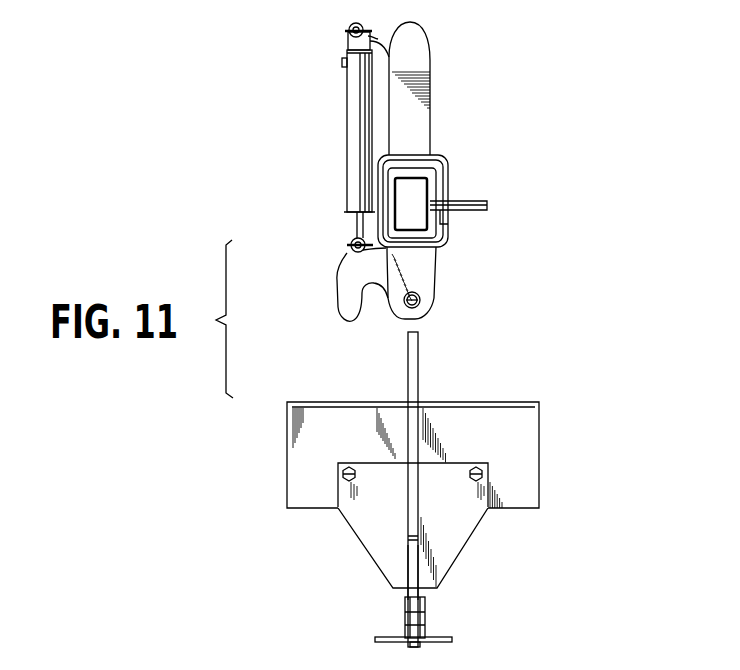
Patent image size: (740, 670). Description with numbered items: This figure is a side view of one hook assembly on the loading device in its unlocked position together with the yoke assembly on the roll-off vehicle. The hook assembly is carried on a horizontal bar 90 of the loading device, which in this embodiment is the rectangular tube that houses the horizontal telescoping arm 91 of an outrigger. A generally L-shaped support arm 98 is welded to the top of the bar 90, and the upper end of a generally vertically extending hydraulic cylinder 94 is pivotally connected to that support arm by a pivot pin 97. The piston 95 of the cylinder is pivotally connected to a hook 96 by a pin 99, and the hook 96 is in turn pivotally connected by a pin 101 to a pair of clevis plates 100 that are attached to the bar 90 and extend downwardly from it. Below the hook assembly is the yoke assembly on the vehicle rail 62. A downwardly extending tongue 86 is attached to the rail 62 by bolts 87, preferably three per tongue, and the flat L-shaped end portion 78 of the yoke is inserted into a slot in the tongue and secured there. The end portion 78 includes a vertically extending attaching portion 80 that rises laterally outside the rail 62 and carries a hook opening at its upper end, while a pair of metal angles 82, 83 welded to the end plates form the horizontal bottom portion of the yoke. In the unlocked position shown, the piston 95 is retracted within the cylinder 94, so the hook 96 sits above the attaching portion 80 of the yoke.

The rail 62 is at (533, 432).
The L-shaped end portion 78 is at (420, 513).
The attaching portion 80 is at (418, 357).
The metal angle 82 is at (388, 638).
The metal angle 83 is at (443, 640).
The tongue 86 is at (377, 547).
The bolts 87 is at (342, 474).
The horizontal bar 90 is at (442, 158).
The horizontal telescoping arm 91 is at (446, 178).
The hydraulic cylinder 94 is at (347, 122).
The piston 95 is at (352, 240).
The hook 96 is at (338, 323).
The pivot pin 97 is at (352, 22).
The support arm 98 is at (423, 53).
The pin 99 is at (343, 262).
The clevis plates 100 is at (432, 258).
The pin 101 is at (422, 294).